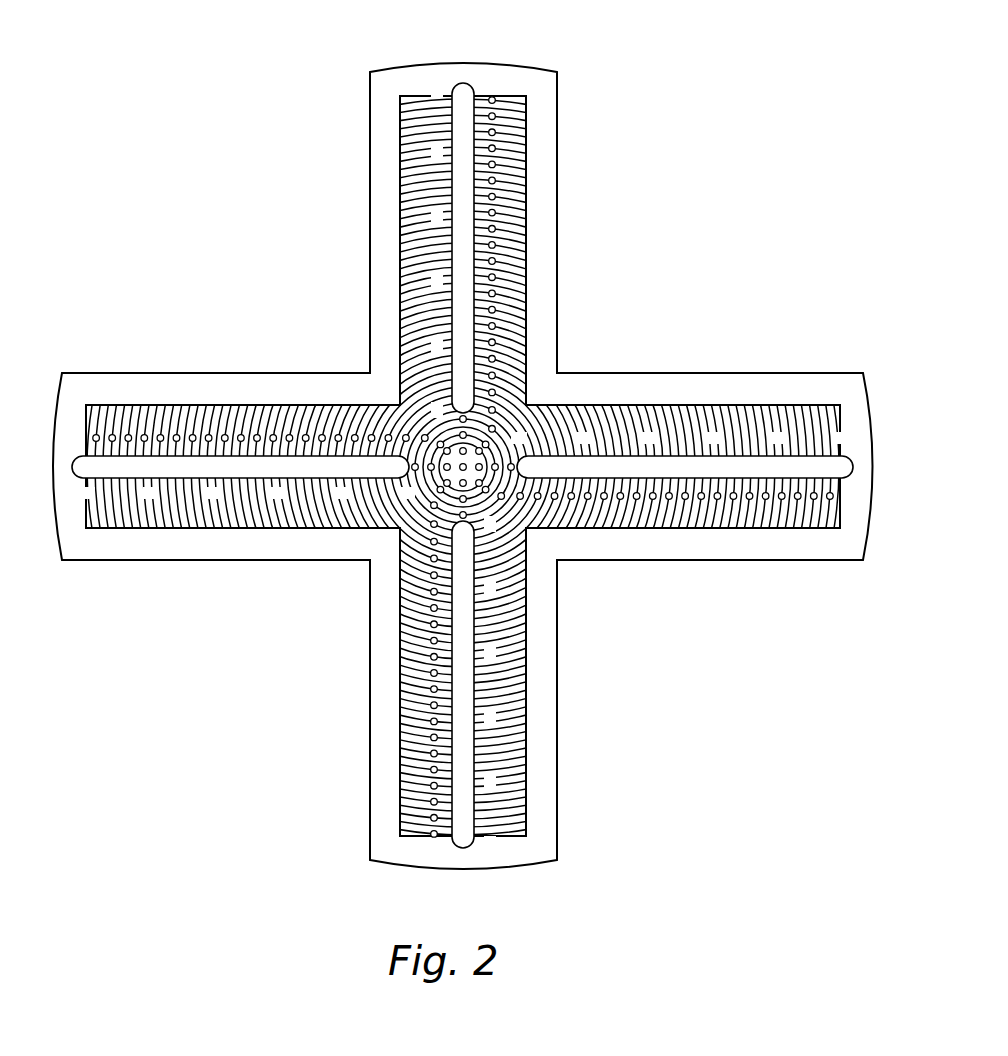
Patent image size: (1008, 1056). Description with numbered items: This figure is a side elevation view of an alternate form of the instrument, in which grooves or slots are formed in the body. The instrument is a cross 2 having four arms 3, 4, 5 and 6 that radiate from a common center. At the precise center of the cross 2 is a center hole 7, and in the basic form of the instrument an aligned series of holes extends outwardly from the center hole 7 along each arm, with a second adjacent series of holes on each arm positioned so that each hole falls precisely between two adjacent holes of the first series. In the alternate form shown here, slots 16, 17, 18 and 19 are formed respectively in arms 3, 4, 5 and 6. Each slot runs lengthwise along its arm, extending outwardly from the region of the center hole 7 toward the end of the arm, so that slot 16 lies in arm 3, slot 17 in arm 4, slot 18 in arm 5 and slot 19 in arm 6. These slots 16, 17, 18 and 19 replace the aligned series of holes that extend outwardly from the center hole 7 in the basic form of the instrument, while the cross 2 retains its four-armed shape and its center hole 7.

The cross 2 is at (557, 174).
The arm 3 is at (506, 118).
The arm 4 is at (790, 405).
The arm 5 is at (510, 800).
The arm 6 is at (118, 528).
The center hole 7 is at (467, 462).
The slot 16 is at (466, 86).
The slot 17 is at (851, 468).
The slot 18 is at (467, 848).
The slot 19 is at (76, 467).